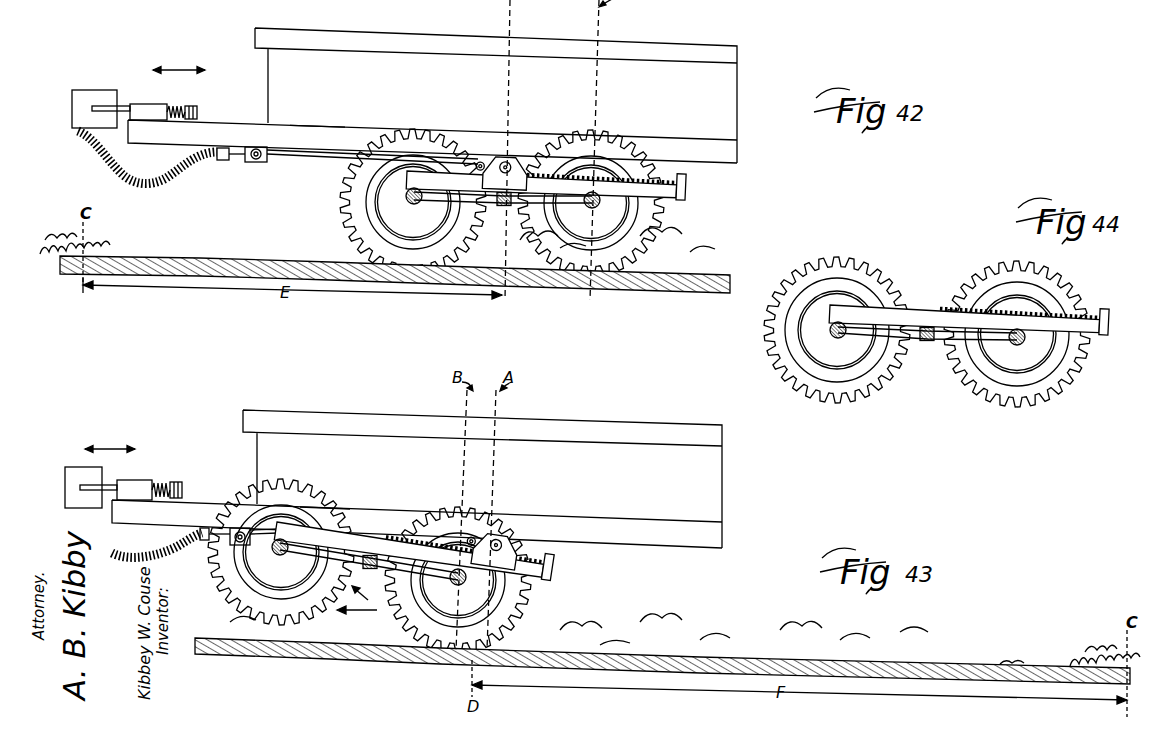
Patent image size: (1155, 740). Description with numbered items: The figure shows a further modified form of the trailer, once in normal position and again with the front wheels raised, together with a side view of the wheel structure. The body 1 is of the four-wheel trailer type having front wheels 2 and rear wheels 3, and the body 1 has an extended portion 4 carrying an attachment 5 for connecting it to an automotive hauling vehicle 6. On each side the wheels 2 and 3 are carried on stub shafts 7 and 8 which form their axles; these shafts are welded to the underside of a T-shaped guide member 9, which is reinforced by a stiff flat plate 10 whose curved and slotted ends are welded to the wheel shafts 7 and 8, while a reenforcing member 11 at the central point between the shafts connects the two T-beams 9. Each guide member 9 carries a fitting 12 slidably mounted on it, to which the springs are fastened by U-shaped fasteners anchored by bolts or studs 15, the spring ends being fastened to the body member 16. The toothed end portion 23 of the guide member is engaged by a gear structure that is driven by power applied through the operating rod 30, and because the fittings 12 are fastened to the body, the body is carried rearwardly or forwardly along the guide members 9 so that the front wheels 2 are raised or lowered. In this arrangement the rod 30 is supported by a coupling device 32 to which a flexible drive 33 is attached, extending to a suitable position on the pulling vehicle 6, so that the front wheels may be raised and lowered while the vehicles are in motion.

In FIG. 42, the body 1 is at (285, 82).
In FIG. 43, the body 1 is at (268, 453).
In FIG. 42, the front wheels 2 is at (349, 233).
In FIG. 43, the front wheels 2 is at (234, 600).
In FIG. 44, the front wheels 2 is at (775, 362).
In FIG. 42, the rear wheels 3 is at (656, 214).
In FIG. 43, the rear wheels 3 is at (530, 632).
In FIG. 44, the rear wheels 3 is at (990, 396).
In FIG. 42, the extended portion 4 is at (220, 129).
In FIG. 43, the extended portion 4 is at (201, 504).
In FIG. 42, the attachment 5 is at (159, 106).
In FIG. 43, the attachment 5 is at (156, 476).
In FIG. 42, the automotive hauling vehicle 6 is at (107, 100).
In FIG. 43, the automotive hauling vehicle 6 is at (100, 483).
In FIG. 42, the stub shaft 7 is at (349, 212).
In FIG. 43, the stub shaft 7 is at (270, 551).
In FIG. 44, the stub shaft 7 is at (830, 331).
In FIG. 42, the stub shaft 8 is at (591, 203).
In FIG. 43, the stub shaft 8 is at (540, 605).
In FIG. 44, the stub shaft 8 is at (1016, 346).
In FIG. 42, the guide member 9 is at (560, 185).
In FIG. 43, the guide member 9 is at (431, 555).
In FIG. 44, the guide member 9 is at (970, 324).
In FIG. 42, the flat plate 10 is at (503, 206).
In FIG. 43, the flat plate 10 is at (284, 556).
In FIG. 44, the flat plate 10 is at (914, 347).
In FIG. 42, the reenforcing member 11 is at (500, 208).
In FIG. 43, the reenforcing member 11 is at (371, 572).
In FIG. 44, the reenforcing member 11 is at (933, 345).
In FIG. 42, the fitting 12 is at (512, 164).
In FIG. 43, the fitting 12 is at (502, 539).
In FIG. 42, the bolts or studs 15 is at (522, 142).
In FIG. 43, the bolts or studs 15 is at (510, 518).
In FIG. 42, the body member 16 is at (311, 116).
In FIG. 43, the body member 16 is at (316, 494).
In FIG. 42, the rack end 23 is at (721, 179).
In FIG. 43, the rack end 23 is at (563, 563).
In FIG. 44, the rack end 23 is at (1102, 308).
In FIG. 42, the operating rod 30 is at (312, 166).
In FIG. 43, the operating rod 30 is at (269, 524).
In FIG. 42, the coupling device 32 is at (257, 162).
In FIG. 43, the coupling device 32 is at (242, 528).
In FIG. 42, the flexible drive 33 is at (186, 173).
In FIG. 43, the flexible drive 33 is at (168, 550).